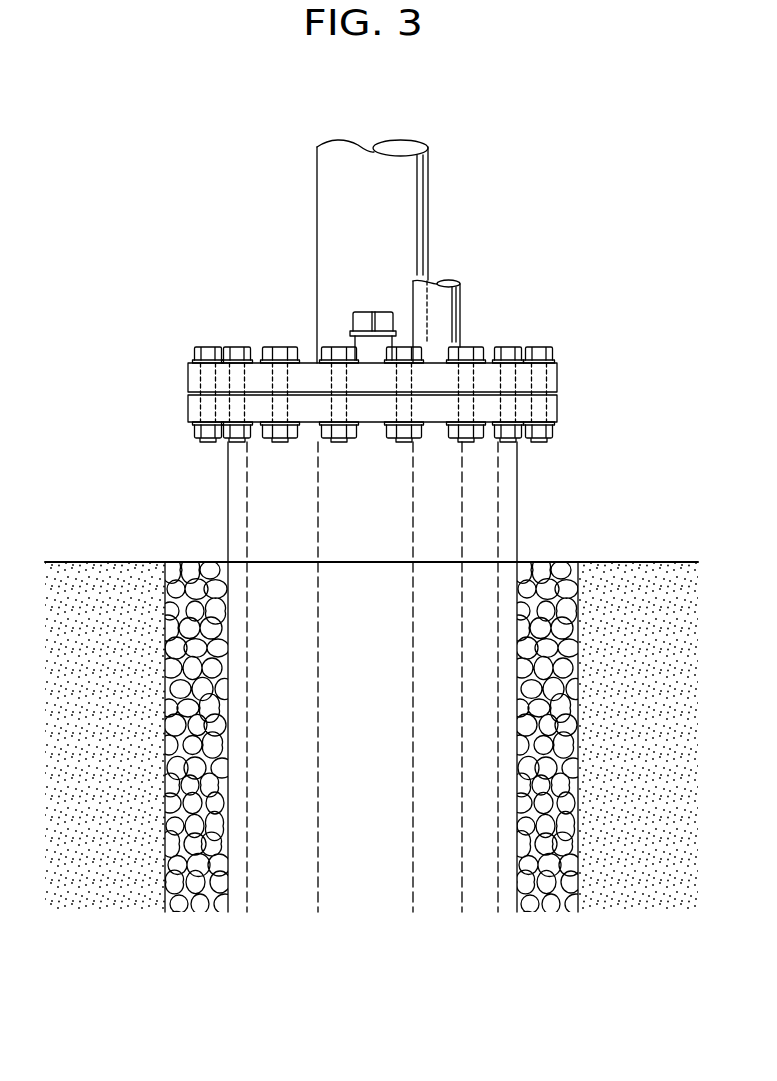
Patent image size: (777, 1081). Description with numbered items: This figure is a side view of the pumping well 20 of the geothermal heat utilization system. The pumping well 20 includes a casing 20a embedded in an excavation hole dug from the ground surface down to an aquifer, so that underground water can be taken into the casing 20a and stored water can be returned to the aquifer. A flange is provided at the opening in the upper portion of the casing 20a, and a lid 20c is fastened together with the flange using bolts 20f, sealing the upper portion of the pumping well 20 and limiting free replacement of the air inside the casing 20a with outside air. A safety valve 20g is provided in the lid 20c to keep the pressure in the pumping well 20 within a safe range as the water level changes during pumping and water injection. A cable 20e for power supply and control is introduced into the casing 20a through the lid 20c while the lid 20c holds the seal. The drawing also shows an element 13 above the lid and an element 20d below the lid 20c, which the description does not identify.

The pipe 13 is at (428, 176).
The pumping well 20 is at (524, 525).
The casing 20a is at (517, 467).
The lid 20c is at (557, 363).
The lower flange plate 20d is at (557, 407).
The cable 20e is at (460, 300).
The bolts 20f is at (512, 348).
The safety valve 20g is at (372, 311).